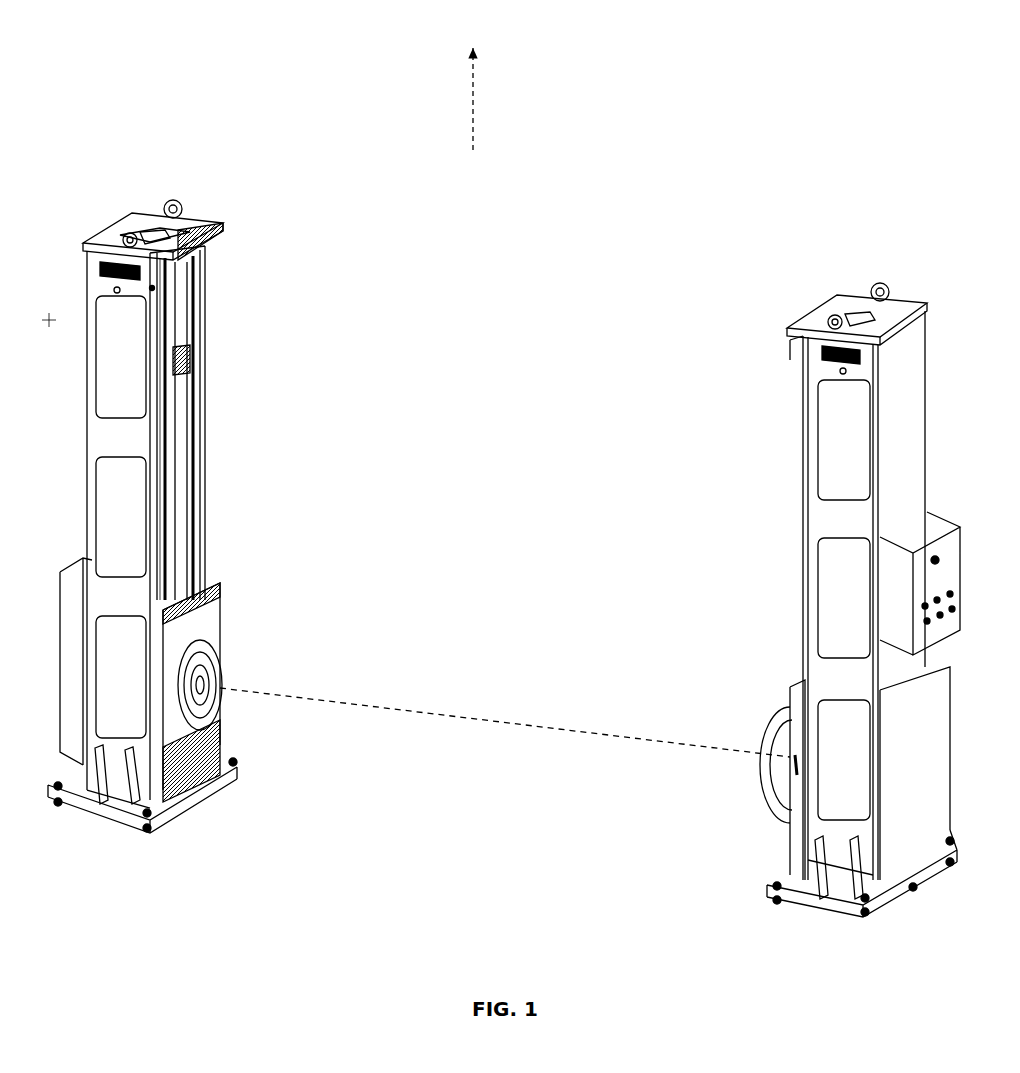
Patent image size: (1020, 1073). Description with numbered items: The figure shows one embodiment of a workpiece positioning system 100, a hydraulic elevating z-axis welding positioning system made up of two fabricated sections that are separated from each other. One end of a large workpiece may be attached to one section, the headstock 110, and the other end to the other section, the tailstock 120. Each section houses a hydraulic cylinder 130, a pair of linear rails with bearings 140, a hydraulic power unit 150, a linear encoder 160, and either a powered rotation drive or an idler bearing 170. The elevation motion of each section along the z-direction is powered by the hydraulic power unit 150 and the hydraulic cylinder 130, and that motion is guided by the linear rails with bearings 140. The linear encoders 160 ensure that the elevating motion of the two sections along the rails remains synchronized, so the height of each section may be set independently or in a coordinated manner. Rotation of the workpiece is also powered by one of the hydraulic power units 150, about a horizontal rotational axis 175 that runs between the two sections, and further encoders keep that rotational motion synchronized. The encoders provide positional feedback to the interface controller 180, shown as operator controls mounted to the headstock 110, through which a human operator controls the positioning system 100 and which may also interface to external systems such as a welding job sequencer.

The workpiece positioning system 100 is at (722, 92).
The headstock 110 is at (808, 300).
The tailstock 120 is at (197, 189).
The hydraulic cylinder 130 is at (180, 387).
The linear rails with bearings 140 is at (207, 464).
The hydraulic power unit 150 is at (957, 637).
The linear encoder 160 is at (797, 330).
The idler bearing 170 is at (219, 653).
The rotational axis 175 is at (549, 728).
The interface controller 180 is at (935, 558).